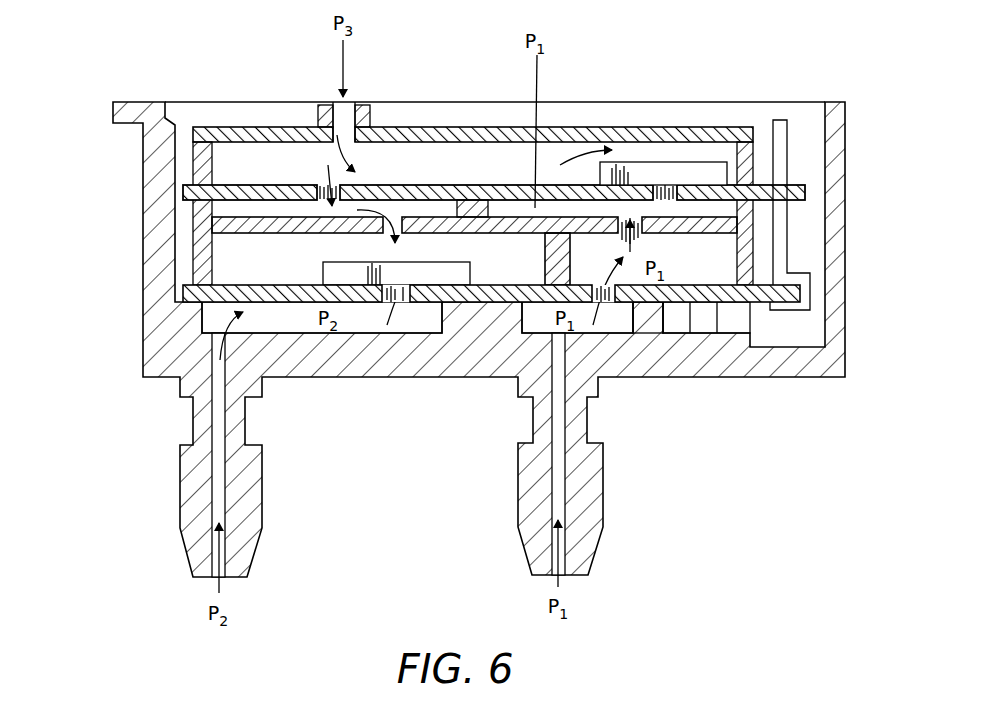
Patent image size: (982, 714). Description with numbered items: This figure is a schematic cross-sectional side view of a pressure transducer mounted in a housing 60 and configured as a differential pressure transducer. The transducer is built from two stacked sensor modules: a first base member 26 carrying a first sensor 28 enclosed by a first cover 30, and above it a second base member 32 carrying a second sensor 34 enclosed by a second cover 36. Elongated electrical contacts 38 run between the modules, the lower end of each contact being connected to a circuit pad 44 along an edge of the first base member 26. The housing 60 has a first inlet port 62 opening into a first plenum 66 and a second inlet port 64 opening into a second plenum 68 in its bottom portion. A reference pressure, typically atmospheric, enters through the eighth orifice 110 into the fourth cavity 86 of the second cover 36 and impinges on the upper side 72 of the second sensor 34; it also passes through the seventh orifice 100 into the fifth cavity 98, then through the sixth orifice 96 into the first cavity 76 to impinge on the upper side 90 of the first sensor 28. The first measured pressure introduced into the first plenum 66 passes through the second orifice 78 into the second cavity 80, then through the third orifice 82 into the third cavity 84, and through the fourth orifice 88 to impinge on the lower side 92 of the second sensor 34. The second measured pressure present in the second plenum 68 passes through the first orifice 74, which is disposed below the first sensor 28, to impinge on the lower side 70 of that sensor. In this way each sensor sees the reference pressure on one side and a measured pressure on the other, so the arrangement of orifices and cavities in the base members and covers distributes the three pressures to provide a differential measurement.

The first base member 26 is at (190, 291).
The first sensor 28 is at (425, 272).
The first cover 30 is at (192, 268).
The second base member 32 is at (195, 192).
The second sensor 34 is at (620, 177).
The second cover 36 is at (193, 160).
The electrical contacts 38 is at (785, 160).
The circuit pad 44 is at (800, 293).
The housing 60 is at (522, 101).
The first inlet port 62 is at (603, 497).
The second inlet port 64 is at (263, 497).
The first plenum 66 is at (543, 323).
The second plenum 68 is at (268, 322).
The lower side of the first sensor 70 is at (352, 287).
The upper side of the second sensor 72 is at (673, 157).
The first orifice 74 is at (400, 290).
The first cavity 76 is at (225, 245).
The second orifice 78 is at (625, 300).
The second cavity 80 is at (727, 275).
The third orifice 82 is at (643, 240).
The third cavity 84 is at (715, 207).
The fourth cavity 86 is at (465, 157).
The fourth orifice 88 is at (677, 185).
The upper side of the first sensor 90 is at (460, 262).
The lower side of the second sensor 92 is at (633, 185).
The sixth orifice 96 is at (392, 214).
The fifth cavity 98 is at (242, 207).
The seventh orifice 100 is at (323, 185).
The eighth orifice 110 is at (335, 103).